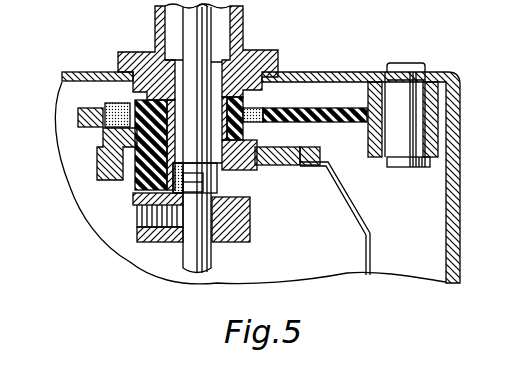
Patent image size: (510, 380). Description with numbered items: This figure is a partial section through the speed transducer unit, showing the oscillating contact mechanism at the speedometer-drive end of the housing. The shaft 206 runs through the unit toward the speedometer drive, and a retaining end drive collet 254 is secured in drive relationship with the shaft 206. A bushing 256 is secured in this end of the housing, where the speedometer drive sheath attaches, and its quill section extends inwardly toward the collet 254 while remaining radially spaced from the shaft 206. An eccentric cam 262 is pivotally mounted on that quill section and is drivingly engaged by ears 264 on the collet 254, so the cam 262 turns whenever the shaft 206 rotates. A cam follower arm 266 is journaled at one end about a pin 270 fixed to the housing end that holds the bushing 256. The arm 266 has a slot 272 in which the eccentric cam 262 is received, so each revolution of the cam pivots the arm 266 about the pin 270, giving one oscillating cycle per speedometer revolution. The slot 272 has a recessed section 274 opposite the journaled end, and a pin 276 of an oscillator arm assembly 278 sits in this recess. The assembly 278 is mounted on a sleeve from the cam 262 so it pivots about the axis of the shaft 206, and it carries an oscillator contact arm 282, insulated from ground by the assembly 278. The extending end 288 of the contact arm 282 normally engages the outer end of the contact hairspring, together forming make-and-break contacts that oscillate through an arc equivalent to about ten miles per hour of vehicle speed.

The shaft 206 is at (203, 254).
The retaining end drive collet 254 is at (242, 220).
The bushing 256 is at (120, 62).
The eccentric cam 262 is at (235, 177).
The ears 264 is at (143, 197).
The cam follower arm 266 is at (303, 107).
The pin 270 is at (392, 95).
The slot 272 is at (252, 110).
The recessed section 274 is at (100, 131).
The pin 276 is at (114, 102).
The oscillator arm assembly 278 is at (312, 152).
The oscillator contact arm 282 is at (349, 197).
The extending end 288 is at (371, 237).